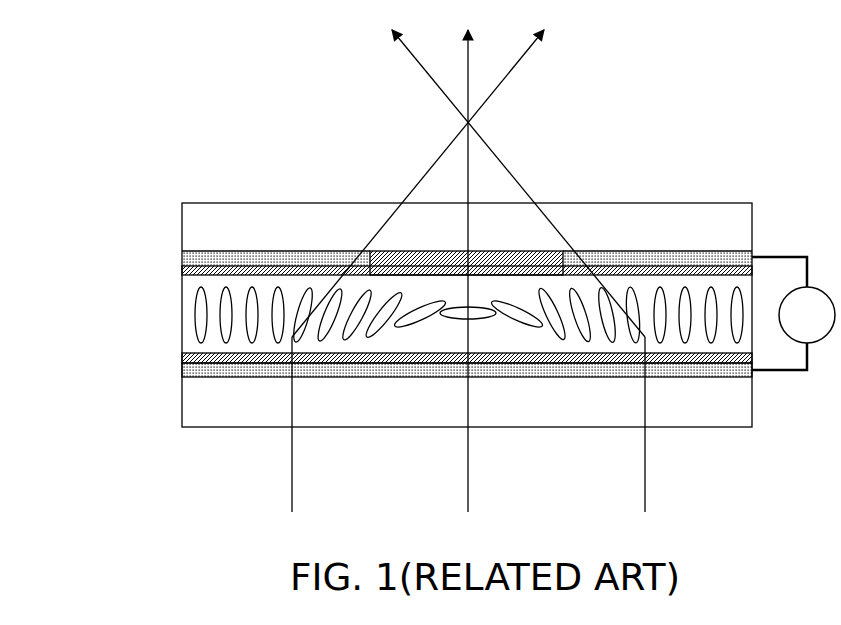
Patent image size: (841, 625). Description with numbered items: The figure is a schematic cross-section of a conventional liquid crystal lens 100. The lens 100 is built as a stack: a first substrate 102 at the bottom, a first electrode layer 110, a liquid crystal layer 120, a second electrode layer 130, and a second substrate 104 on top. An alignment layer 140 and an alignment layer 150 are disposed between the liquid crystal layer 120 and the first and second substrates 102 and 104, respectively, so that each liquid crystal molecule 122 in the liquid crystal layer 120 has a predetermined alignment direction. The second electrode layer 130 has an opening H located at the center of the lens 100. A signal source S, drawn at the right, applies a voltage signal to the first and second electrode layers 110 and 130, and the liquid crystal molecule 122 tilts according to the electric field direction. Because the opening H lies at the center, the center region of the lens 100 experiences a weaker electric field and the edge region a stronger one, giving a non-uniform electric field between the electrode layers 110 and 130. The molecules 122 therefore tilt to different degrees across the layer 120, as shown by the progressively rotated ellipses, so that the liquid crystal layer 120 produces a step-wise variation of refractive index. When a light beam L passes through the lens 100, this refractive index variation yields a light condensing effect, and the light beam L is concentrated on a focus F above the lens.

The liquid crystal lens 100 is at (793, 525).
The first substrate 102 is at (197, 408).
The second substrate 104 is at (197, 225).
The first electrode layer 110 is at (190, 375).
The liquid crystal layer 120 is at (190, 317).
The liquid crystal molecule 122 is at (246, 300).
The second electrode layer 130 is at (190, 258).
The alignment layer 140 is at (402, 246).
The alignment layer 150 is at (407, 244).
The opening H is at (374, 258).
The light beam L is at (520, 180).
The focus F is at (484, 122).
The signal source S is at (793, 313).